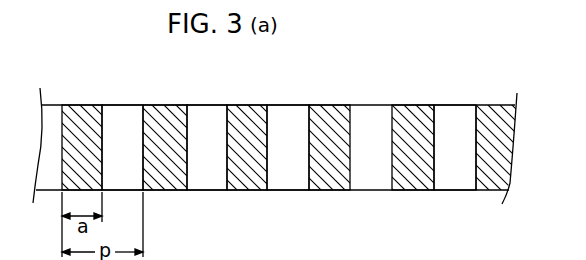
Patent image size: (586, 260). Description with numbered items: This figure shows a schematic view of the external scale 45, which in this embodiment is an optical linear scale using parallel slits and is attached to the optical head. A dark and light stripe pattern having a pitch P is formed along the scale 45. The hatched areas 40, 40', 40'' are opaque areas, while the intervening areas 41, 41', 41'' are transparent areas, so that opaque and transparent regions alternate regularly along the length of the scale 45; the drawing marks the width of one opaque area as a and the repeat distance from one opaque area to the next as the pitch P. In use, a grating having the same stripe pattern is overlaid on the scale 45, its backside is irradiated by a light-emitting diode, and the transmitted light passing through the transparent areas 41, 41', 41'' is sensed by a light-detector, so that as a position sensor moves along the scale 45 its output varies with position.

The opaque area 40 is at (293, 123).
The transparent area 41 is at (122, 123).
The opaque area 40' is at (293, 122).
The transparent area 41' is at (207, 122).
The opaque area 40'' is at (293, 122).
The transparent area 41'' is at (291, 122).
The external scale 45 is at (451, 105).